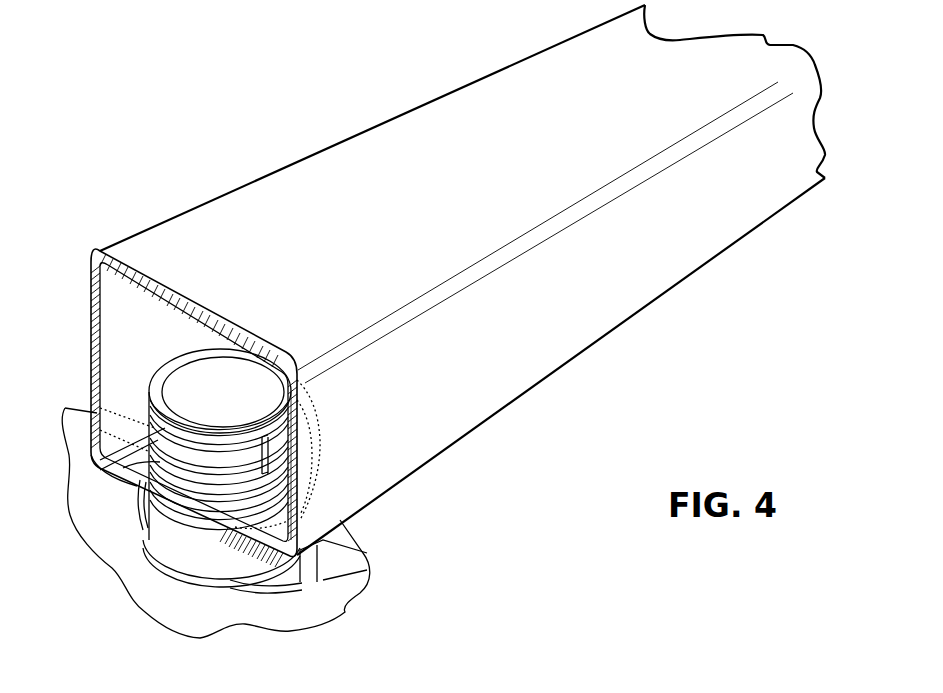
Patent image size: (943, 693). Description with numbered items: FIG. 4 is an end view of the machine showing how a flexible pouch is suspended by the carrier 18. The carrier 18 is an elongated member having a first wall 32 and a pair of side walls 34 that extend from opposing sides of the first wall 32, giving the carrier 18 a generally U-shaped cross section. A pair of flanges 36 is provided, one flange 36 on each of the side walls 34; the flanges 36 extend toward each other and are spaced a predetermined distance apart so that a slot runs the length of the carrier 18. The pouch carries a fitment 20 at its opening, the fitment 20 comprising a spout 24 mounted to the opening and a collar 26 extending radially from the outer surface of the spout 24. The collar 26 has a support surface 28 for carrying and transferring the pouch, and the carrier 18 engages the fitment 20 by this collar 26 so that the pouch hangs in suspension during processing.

The carrier 18 is at (440, 72).
The fitment 20 is at (238, 396).
The spout 24 is at (190, 556).
The collar 26 is at (125, 470).
The support surface 28 is at (142, 530).
The first wall 32 is at (480, 166).
The side walls 34 is at (148, 351).
The flanges 36 is at (100, 460).